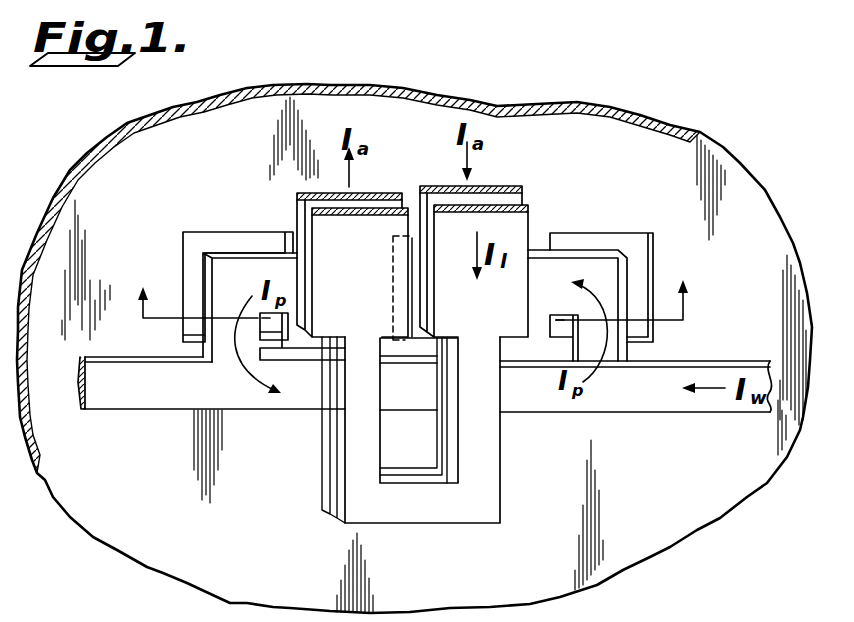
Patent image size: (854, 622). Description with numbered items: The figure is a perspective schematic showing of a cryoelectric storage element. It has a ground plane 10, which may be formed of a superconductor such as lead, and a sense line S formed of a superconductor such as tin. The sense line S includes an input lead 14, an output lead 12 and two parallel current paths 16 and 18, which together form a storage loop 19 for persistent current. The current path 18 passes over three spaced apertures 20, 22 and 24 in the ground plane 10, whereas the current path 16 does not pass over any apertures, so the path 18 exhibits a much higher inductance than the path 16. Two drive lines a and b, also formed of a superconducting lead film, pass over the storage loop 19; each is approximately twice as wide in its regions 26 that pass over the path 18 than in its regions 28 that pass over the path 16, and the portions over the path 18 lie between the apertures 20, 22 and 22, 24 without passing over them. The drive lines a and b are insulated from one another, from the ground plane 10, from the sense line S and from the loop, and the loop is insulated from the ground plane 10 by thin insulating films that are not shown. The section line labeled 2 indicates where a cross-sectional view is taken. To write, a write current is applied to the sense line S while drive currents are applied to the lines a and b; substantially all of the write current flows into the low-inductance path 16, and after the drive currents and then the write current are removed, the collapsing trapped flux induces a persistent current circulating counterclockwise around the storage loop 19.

The ground plane 10 is at (633, 128).
The output lead 12 is at (163, 370).
The input lead 14 is at (749, 372).
The current path 16 is at (306, 400).
The current path 18 is at (268, 264).
The storage loop 19 is at (553, 302).
The aperture 20 is at (193, 256).
The aperture 22 is at (412, 238).
The aperture 24 is at (630, 240).
The region 26 is at (516, 289).
The region 28 is at (580, 444).
The section line 2- 2 is at (413, 301).
The drive line a is at (528, 186).
The drive line b is at (567, 195).
The sense line S is at (179, 412).